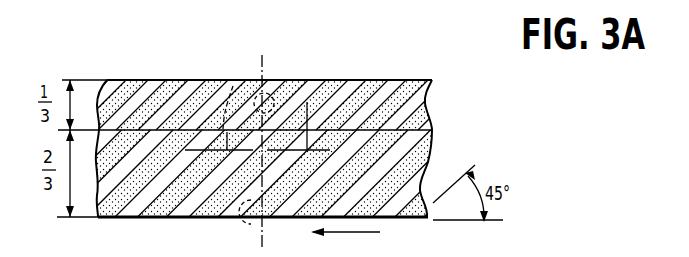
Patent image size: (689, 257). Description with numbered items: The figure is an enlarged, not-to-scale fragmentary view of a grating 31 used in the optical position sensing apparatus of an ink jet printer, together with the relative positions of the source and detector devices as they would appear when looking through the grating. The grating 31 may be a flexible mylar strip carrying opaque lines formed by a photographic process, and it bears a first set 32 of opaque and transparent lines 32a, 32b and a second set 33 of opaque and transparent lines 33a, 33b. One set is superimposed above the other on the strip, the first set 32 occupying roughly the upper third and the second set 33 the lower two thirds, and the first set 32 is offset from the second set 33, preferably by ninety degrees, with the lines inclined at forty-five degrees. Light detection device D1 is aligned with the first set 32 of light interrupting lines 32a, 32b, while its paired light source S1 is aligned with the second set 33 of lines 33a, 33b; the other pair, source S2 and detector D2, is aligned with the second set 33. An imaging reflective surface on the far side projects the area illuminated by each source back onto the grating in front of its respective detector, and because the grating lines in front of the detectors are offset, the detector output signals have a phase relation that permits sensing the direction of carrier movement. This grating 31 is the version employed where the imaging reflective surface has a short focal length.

The grating 31 is at (306, 75).
The first set of opaque and transparent lines 32 is at (234, 81).
The opaque line of first set 32a is at (163, 83).
The transparent line of first set 32b is at (135, 80).
The second set of opaque and transparent lines 33 is at (299, 188).
The opaque line of second set 33a is at (108, 208).
The transparent line of second set 33b is at (123, 216).
The light source S1 is at (252, 222).
The light source S2 is at (318, 81).
The light detection device D1 is at (283, 82).
The light detection device D2 is at (230, 75).